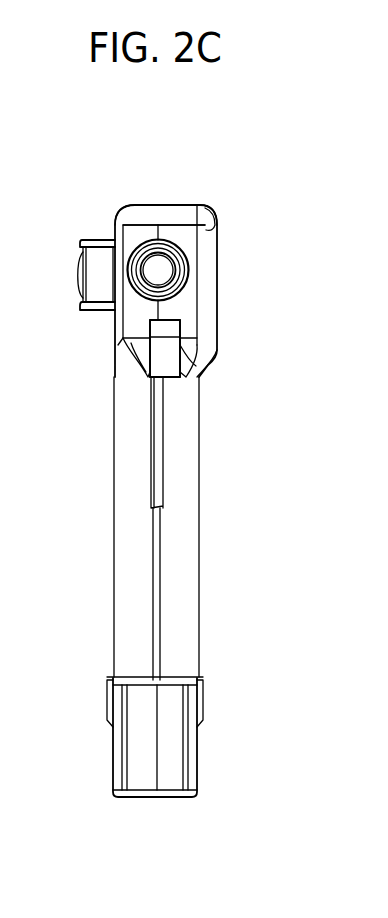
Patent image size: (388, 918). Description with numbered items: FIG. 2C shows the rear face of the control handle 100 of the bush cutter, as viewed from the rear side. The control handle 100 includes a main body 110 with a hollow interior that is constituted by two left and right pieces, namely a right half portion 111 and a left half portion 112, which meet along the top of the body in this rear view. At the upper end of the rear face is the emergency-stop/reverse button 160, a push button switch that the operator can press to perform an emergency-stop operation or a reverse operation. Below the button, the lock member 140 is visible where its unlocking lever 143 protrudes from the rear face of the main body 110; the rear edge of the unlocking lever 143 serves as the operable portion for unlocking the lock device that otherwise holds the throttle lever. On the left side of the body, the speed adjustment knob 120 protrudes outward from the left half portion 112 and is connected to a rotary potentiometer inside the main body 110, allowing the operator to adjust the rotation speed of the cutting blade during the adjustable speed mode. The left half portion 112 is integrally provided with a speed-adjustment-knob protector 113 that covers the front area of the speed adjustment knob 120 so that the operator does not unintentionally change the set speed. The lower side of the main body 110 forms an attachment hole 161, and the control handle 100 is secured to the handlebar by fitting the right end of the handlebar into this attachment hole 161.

The control handle 100 is at (80, 142).
The main body 110 is at (195, 140).
The right half portion 111 is at (173, 205).
The left half portion 112 is at (146, 205).
The speed-adjustment-knob protector 113 is at (100, 240).
The speed adjustment knob 120 is at (102, 300).
The lock member 140 is at (170, 333).
The unlocking lever 143 is at (170, 333).
The emergency-stop/reverse button 160 is at (165, 267).
The attachment hole 161 is at (125, 790).